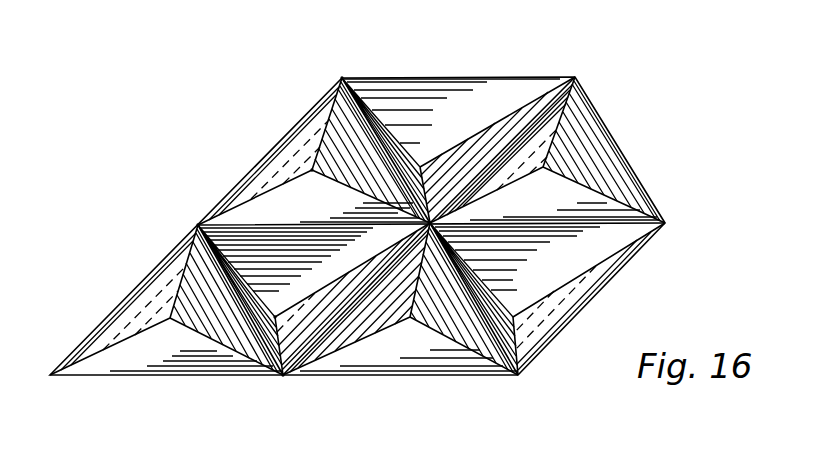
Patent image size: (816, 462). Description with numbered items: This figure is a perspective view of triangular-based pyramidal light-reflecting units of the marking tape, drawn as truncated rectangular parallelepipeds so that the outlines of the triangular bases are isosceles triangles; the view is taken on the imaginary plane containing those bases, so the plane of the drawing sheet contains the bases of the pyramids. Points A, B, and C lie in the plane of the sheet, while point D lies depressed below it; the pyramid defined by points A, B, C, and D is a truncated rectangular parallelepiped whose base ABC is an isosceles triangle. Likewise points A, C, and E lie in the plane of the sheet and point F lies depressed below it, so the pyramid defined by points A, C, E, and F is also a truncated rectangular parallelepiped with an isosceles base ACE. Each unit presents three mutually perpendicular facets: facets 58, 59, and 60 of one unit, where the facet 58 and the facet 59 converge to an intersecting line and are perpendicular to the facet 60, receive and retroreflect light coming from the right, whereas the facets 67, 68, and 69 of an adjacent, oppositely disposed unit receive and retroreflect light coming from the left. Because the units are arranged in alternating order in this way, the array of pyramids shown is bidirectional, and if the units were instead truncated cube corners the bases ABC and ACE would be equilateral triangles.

The facet 58 is at (366, 244).
The facet 59 is at (311, 326).
The facet 60 is at (266, 377).
The facet 67 is at (294, 154).
The facet 68 is at (287, 208).
The facet 69 is at (349, 125).
The point A is at (197, 224).
The point B is at (342, 77).
The point C is at (445, 234).
The point D is at (312, 171).
The point E is at (283, 376).
The point F is at (274, 316).